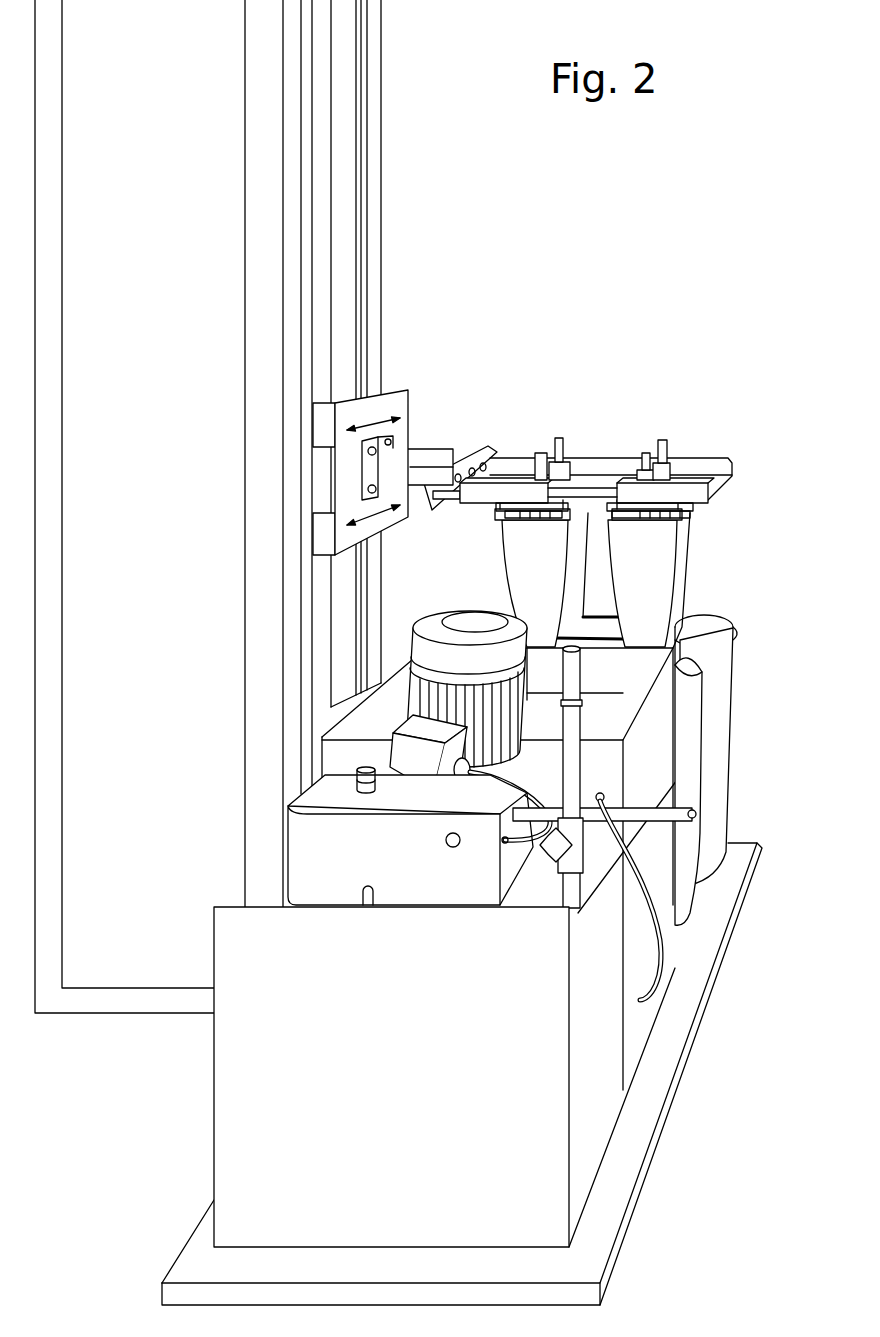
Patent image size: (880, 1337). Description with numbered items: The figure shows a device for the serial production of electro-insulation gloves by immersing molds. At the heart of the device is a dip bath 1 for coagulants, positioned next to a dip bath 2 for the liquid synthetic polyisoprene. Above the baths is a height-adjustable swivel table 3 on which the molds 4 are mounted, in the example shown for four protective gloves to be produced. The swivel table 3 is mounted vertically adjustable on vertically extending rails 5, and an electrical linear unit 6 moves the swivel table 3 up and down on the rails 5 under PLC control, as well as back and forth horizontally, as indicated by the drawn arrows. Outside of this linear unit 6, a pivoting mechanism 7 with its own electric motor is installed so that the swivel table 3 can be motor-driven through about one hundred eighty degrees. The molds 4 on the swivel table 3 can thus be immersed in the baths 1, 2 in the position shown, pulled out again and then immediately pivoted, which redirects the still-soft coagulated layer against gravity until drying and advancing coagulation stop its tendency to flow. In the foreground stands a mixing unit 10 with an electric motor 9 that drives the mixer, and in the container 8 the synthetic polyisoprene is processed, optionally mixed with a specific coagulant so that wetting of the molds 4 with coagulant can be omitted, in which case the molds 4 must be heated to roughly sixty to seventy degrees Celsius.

The dip bath for coagulants 1 is at (692, 707).
The dip bath for liquid synthetic polyisoprene 2 is at (722, 662).
The height-adjustable swivel table 3 is at (715, 482).
The molds 4 is at (648, 597).
The vertically extending rails 5 is at (310, 245).
The electrical linear unit 6 is at (388, 413).
The pivoting mechanism 7 is at (433, 442).
The container 8 is at (240, 1086).
The electric motor 9 is at (437, 698).
The mixing unit 10 is at (328, 853).